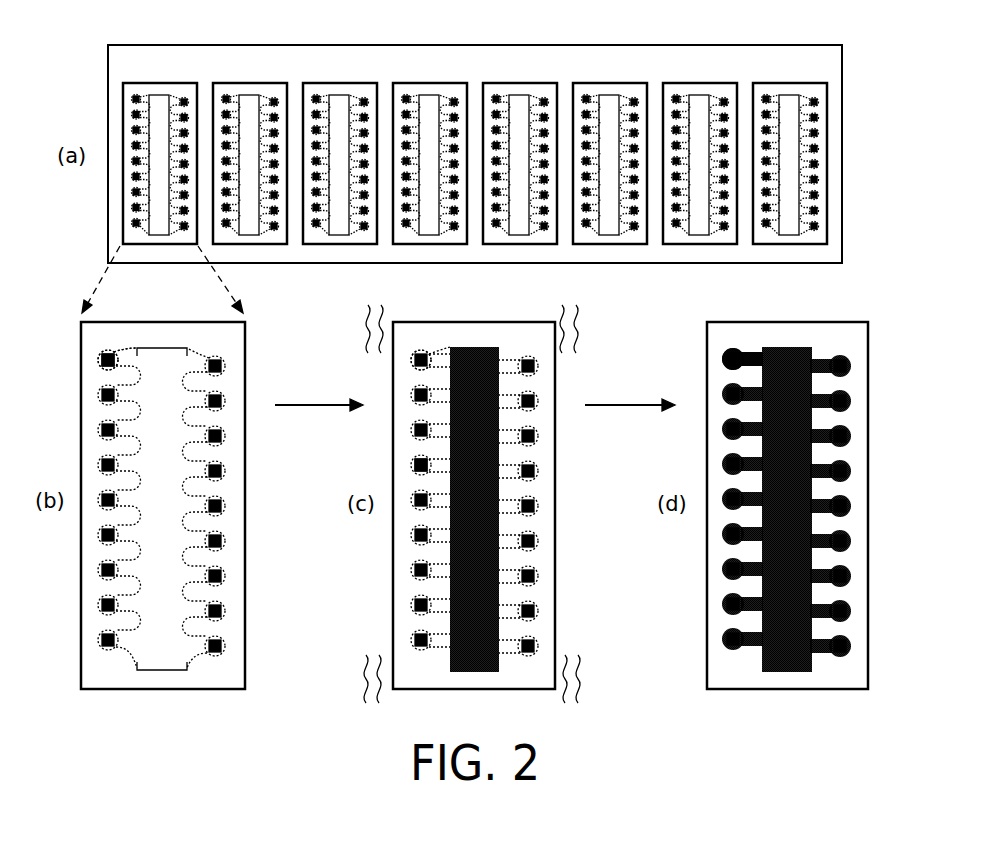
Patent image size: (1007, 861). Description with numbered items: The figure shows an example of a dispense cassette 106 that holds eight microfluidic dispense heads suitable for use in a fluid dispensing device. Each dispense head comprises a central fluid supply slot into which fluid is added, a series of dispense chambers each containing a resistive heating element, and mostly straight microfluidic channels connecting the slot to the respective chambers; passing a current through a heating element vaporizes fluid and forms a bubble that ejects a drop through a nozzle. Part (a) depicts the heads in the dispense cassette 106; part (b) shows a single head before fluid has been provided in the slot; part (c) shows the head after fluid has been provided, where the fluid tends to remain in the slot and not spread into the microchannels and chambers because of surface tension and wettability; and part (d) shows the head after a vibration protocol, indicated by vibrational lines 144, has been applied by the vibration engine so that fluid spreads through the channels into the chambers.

The dispense cassette 106 is at (587, 76).
The vibrational lines 144 is at (580, 316).